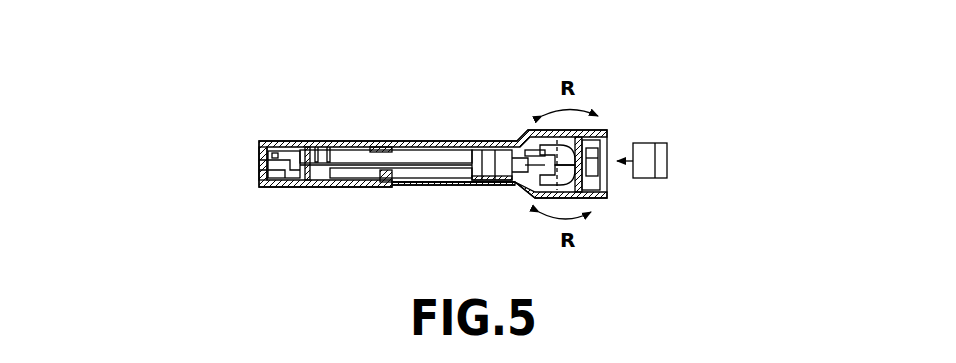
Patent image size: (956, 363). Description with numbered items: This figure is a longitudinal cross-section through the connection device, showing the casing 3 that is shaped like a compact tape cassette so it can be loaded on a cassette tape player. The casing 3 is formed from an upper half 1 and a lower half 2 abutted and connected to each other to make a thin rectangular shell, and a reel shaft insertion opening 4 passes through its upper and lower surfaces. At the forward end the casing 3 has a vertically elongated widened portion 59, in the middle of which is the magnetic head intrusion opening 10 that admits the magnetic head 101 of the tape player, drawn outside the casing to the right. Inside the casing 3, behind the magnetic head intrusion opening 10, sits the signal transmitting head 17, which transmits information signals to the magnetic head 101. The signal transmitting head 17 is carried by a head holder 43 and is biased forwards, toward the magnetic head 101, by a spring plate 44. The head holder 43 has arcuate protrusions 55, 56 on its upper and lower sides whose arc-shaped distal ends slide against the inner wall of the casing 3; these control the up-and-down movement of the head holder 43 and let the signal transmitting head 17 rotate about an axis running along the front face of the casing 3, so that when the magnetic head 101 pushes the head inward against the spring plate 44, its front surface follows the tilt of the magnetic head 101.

The upper half 1 is at (272, 140).
The lower half 2 is at (273, 188).
The casing 3 is at (250, 167).
The reel shaft insertion opening 4 is at (382, 146).
The magnetic head intrusion opening 10 is at (600, 140).
The signal transmitting head 17 is at (600, 157).
The head holder 43 is at (522, 190).
The spring plate 44 is at (497, 183).
The arcuate protrusion 55 is at (585, 132).
The arcuate protrusion 56 is at (584, 198).
The widened portion 59 is at (521, 133).
The magnetic head 101 is at (650, 173).